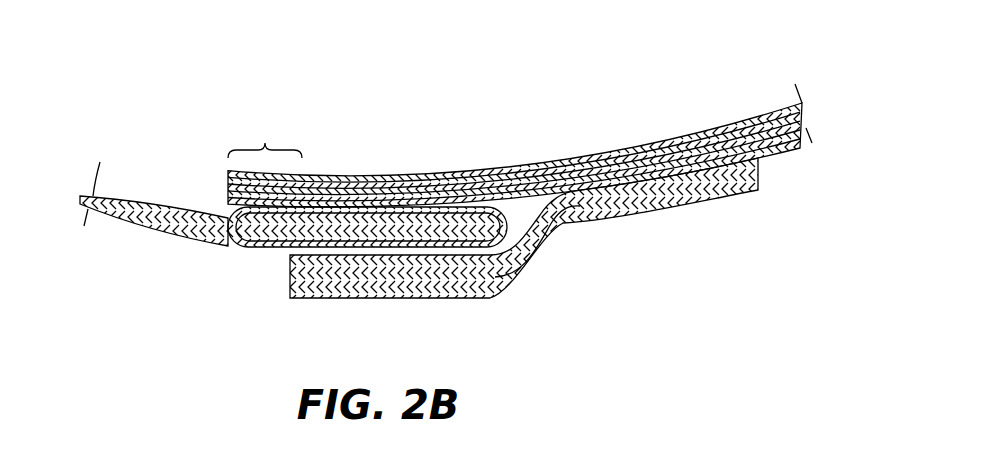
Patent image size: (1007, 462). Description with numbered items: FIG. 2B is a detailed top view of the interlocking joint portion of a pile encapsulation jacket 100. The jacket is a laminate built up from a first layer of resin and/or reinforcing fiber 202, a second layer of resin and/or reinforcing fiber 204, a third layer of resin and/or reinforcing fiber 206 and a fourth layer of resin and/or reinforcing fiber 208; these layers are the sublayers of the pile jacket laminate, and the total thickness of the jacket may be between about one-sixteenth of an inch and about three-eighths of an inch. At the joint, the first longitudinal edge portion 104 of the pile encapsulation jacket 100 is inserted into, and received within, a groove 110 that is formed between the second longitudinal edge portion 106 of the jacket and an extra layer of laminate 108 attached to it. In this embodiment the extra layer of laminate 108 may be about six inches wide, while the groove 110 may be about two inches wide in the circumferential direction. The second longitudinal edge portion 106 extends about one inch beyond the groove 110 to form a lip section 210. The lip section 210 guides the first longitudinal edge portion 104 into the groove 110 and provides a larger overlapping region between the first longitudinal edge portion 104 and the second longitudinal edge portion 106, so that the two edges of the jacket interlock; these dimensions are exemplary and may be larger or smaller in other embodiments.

The pile encapsulation jacket 100 is at (455, 179).
The first longitudinal edge portion 104 is at (167, 230).
The second longitudinal edge portion 106 is at (520, 123).
The extra layer of laminate 108 is at (524, 228).
The groove 110 is at (547, 242).
The first layer of resin and/or reinforcing fiber 202 is at (768, 112).
The second layer of resin and/or reinforcing fiber 204 is at (720, 127).
The third layer of resin and/or reinforcing fiber 206 is at (672, 150).
The fourth layer of resin and/or reinforcing fiber 208 is at (627, 155).
The lip section 210 is at (265, 111).